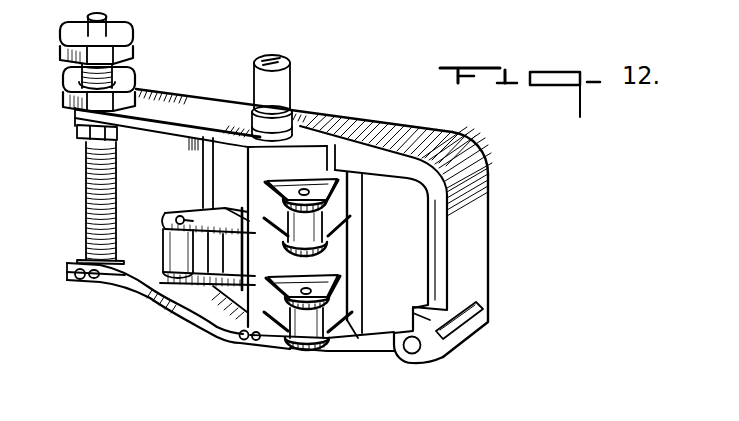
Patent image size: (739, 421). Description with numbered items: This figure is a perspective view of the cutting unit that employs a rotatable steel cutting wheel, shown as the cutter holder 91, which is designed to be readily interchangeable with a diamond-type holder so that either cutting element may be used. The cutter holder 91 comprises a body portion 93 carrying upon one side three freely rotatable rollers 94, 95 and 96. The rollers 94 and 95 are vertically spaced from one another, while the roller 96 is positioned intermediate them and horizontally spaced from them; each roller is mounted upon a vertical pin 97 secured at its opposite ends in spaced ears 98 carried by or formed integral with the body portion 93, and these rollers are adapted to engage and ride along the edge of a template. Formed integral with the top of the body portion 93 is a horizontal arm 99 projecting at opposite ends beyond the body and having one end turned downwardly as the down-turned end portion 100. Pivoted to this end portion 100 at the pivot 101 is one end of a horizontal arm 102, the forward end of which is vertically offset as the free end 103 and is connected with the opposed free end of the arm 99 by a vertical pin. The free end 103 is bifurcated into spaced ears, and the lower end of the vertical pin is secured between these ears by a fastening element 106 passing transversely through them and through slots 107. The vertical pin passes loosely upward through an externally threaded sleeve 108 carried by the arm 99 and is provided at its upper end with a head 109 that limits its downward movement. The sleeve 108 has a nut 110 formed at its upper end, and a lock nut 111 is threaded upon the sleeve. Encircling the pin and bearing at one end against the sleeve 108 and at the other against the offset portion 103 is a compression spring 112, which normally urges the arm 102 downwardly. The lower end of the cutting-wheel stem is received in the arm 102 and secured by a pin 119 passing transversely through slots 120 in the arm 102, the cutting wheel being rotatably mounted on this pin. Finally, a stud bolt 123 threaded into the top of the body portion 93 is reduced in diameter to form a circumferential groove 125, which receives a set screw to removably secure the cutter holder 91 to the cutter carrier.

The cutter holder 91 is at (342, 115).
The body portion 93 is at (348, 228).
The roller 94 is at (290, 219).
The roller 95 is at (284, 313).
The roller 96 is at (163, 240).
The vertical pin 97 is at (182, 216).
The spaced ears 98 is at (230, 249).
The horizontal arm 99 is at (193, 107).
The down-turned end portion 100 is at (472, 236).
The pivot 101 is at (413, 371).
The horizontal arm 102 is at (327, 352).
The vertically offset free end 103 is at (100, 288).
The fastening element 106 is at (74, 272).
The slots 107 is at (92, 280).
The externally threaded sleeve 108 is at (77, 135).
The head 109 is at (60, 33).
The nut 110 is at (134, 52).
The lock nut 111 is at (137, 82).
The compression spring 112 is at (84, 203).
The pin 119 is at (243, 340).
The slots 120 is at (255, 341).
The stud bolt 123 is at (286, 59).
The circumferential groove 125 is at (293, 115).